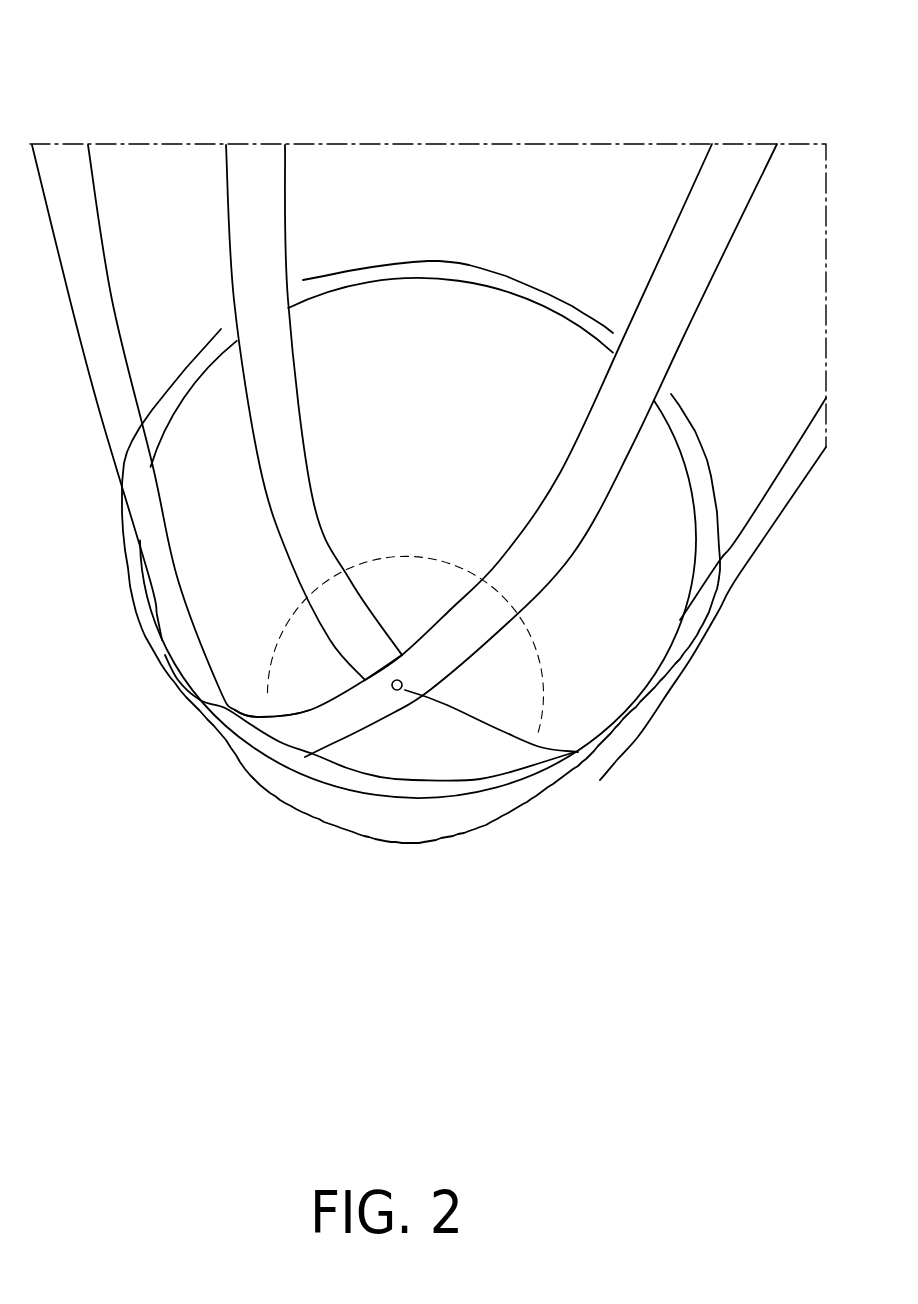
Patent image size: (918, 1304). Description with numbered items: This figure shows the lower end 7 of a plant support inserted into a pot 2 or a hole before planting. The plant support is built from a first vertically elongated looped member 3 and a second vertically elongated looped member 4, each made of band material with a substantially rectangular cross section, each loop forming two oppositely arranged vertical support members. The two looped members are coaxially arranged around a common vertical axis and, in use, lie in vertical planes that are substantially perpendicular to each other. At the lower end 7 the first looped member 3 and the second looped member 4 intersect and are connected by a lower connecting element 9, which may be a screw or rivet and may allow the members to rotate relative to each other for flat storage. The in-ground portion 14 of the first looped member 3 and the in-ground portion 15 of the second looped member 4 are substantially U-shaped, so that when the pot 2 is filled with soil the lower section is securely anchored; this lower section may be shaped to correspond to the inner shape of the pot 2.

The pot 2 is at (428, 318).
The first vertically elongated looped member 3 is at (248, 213).
The second vertically elongated looped member 4 is at (713, 188).
The lower end 7 is at (377, 700).
The lower connecting element 9 is at (400, 692).
The in-ground portion of the first looped member 14 is at (482, 742).
The in-ground portion of the second looped member 15 is at (327, 720).